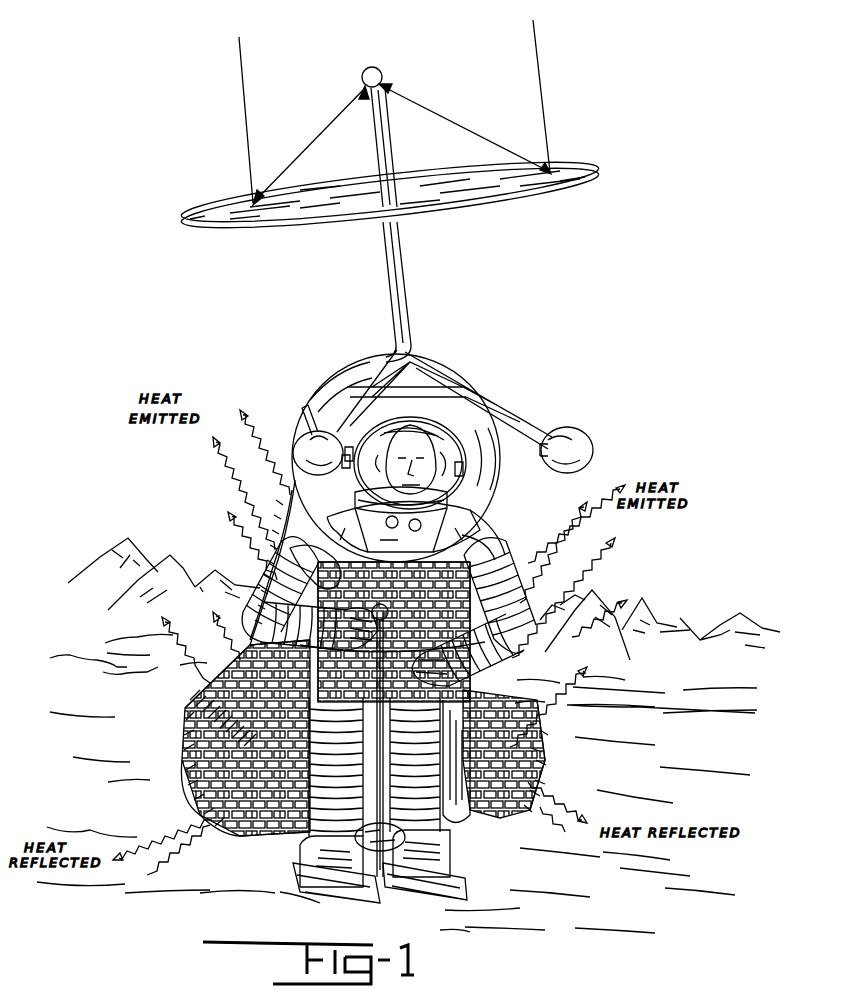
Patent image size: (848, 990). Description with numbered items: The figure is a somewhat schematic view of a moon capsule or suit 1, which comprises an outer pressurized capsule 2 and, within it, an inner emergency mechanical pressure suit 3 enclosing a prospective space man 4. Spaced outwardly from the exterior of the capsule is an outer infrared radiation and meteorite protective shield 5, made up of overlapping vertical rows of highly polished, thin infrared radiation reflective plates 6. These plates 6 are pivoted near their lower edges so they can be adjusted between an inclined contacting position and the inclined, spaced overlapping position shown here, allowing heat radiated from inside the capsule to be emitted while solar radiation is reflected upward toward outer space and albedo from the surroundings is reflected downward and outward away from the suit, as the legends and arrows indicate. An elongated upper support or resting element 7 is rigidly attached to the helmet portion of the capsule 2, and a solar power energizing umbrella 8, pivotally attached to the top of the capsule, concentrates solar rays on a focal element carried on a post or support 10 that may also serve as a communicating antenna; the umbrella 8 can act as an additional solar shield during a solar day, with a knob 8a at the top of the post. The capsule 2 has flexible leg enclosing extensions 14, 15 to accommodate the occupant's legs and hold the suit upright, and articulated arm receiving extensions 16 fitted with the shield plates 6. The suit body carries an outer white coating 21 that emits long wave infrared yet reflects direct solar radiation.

The moon capsule or suit 1 is at (317, 383).
The outer pressurized capsule 2 is at (342, 370).
The inner emergency mechanical pressure suit 3 is at (482, 512).
The space man 4 is at (430, 452).
The outer infrared radiation and meteorite protective shield 5 is at (232, 668).
The infrared radiation reflective plates 6 is at (276, 493).
The elongated upper support or resting element 7 is at (594, 448).
The solar power energizing umbrella 8 is at (500, 195).
The knob 8a is at (383, 78).
The post or support 10 is at (395, 185).
The flexible leg enclosing extension 14 is at (450, 818).
The flexible leg enclosing extension 15 is at (305, 843).
The articulated arm receiving extensions 16 is at (262, 573).
The outer white coating 21 is at (500, 538).